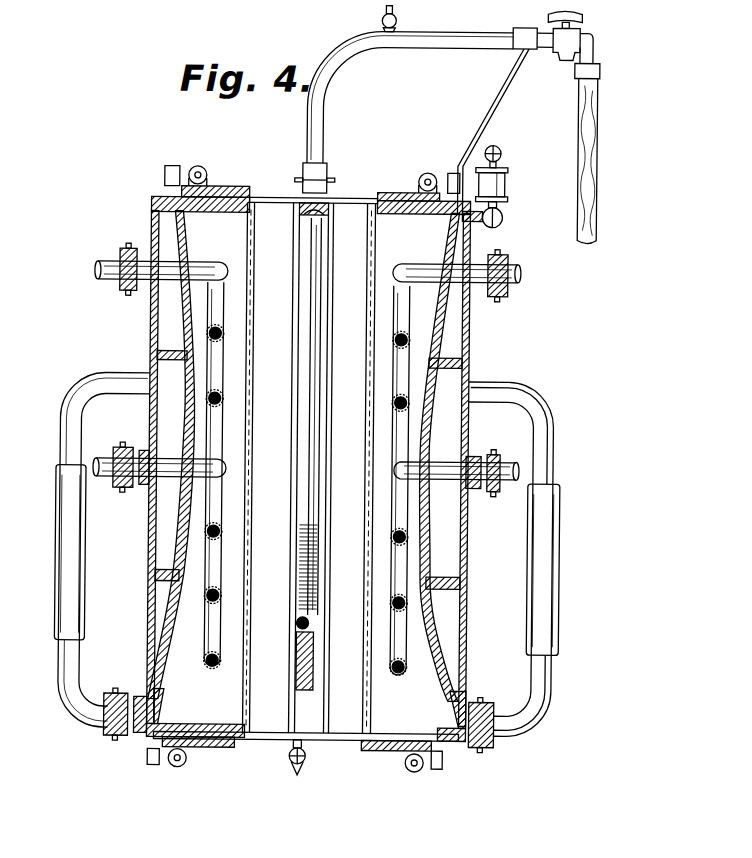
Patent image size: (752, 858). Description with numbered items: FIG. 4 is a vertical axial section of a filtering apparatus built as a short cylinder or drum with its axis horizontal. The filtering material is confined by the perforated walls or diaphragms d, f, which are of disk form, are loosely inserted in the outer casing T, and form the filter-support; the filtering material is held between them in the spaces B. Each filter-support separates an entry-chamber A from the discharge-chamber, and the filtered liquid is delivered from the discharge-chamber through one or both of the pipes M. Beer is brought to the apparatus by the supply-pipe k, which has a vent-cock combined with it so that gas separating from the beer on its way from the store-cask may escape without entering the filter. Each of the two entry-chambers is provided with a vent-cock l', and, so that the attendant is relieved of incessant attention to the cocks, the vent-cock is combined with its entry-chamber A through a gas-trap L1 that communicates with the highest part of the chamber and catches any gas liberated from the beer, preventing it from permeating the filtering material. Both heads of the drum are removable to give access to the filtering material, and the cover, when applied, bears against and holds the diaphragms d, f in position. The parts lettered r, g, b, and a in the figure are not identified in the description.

The entry-chamber A is at (308, 468).
The filtering-material space B is at (307, 472).
The delivery pipe M is at (424, 110).
The outer casing T is at (346, 741).
The gas-trap L1 is at (509, 187).
The vent-cock l' is at (504, 152).
The supply-pipe k is at (301, 558).
The rib r is at (178, 530).
The perforated tube g is at (220, 552).
The core rod b is at (311, 466).
The perforated wall d is at (290, 593).
The perforated wall f is at (248, 634).
The outlet connection a is at (477, 738).